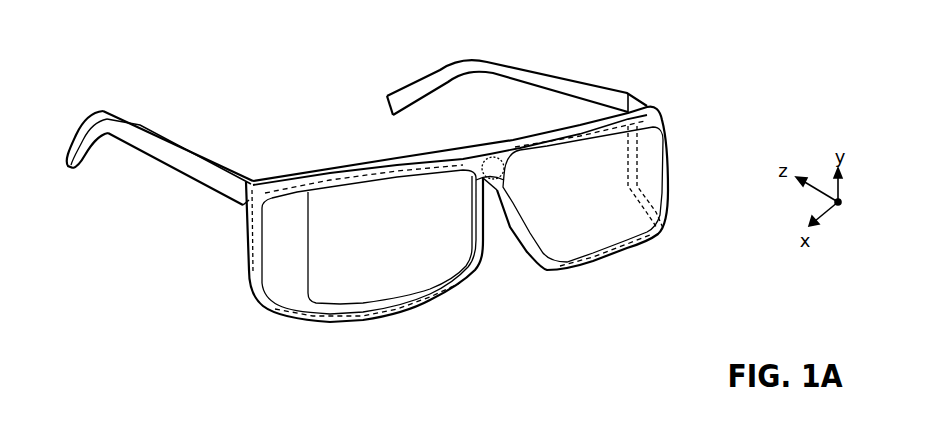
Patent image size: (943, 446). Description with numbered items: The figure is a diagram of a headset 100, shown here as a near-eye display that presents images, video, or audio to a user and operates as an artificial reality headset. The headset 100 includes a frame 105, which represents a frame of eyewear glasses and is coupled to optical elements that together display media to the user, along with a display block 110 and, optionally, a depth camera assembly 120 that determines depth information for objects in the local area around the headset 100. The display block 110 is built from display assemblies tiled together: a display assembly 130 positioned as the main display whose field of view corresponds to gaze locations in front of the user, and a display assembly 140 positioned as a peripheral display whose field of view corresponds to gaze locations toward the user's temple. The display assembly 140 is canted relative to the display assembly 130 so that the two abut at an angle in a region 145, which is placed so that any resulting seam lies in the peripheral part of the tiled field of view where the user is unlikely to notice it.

The headset 100 is at (29, 38).
The frame 105 is at (165, 155).
The display block 110 is at (281, 193).
The depth camera assembly 120 is at (492, 173).
The display assembly 130 is at (425, 257).
The display assembly 140 is at (273, 272).
The region 145 is at (305, 282).